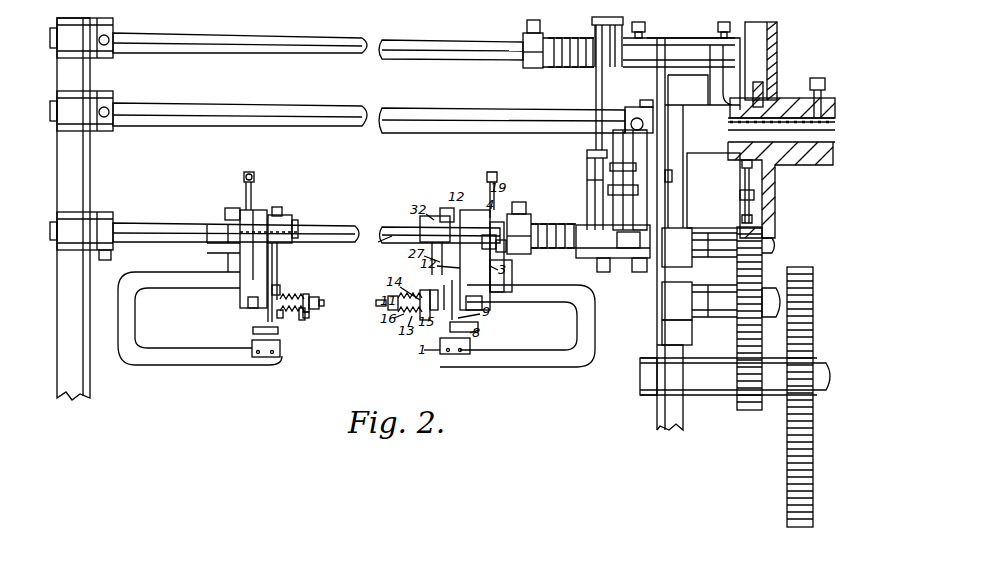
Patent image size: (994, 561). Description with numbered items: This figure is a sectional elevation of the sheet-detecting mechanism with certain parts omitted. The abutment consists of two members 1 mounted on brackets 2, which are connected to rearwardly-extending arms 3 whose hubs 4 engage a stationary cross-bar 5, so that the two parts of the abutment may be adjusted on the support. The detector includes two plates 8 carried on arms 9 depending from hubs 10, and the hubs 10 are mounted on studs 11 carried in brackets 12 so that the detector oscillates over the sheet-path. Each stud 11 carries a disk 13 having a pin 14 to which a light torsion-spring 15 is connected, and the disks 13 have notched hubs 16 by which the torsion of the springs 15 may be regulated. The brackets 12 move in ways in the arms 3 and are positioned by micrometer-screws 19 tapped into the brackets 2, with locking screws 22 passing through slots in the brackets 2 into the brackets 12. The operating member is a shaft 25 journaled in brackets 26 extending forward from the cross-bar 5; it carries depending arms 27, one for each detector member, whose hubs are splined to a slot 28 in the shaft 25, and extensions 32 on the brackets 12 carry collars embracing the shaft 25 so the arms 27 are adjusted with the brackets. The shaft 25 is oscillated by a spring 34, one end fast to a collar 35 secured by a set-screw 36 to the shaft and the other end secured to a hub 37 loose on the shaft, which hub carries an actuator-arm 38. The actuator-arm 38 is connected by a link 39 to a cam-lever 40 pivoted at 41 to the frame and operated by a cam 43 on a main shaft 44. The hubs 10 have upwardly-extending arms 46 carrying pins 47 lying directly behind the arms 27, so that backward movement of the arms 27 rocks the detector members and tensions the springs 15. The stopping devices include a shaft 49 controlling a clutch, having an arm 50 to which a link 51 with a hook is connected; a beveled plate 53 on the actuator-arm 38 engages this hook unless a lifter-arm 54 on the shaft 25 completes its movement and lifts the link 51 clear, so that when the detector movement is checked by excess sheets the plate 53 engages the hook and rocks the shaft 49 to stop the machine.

The abutment member 1 is at (280, 348).
The bracket 2 is at (134, 324).
The rearwardly-extending arm 3 is at (228, 268).
The hub 4 is at (226, 210).
The cross-bar 5 is at (432, 225).
The plate 8 is at (253, 331).
The arm 9 is at (270, 317).
The hub 10 is at (444, 305).
The stud 11 is at (320, 304).
The bracket 12 is at (268, 272).
The disk 13 is at (303, 316).
The pin 14 is at (309, 298).
The torsion-spring 15 is at (282, 314).
The notched hub 16 is at (309, 314).
The micrometer-screw 19 is at (253, 200).
The screw 22 is at (497, 250).
The shaft 25 is at (384, 243).
The bracket 26 is at (117, 218).
The depending arm 27 is at (274, 266).
The slot 28 is at (344, 226).
The extension 32 is at (280, 215).
The spring 34 is at (552, 225).
The collar 35 is at (512, 252).
The set-screw 36 is at (518, 212).
The hub 37 is at (600, 250).
The actuator-arm 38 is at (587, 172).
The link 39 is at (622, 213).
The cam-lever 40 is at (640, 190).
The pivot 41 is at (665, 178).
The cam 43 is at (640, 107).
The shaft 44 is at (522, 115).
The upwardly-extending arm 46 is at (482, 302).
The pin 47 is at (286, 288).
The shaft 49 is at (470, 46).
The arm 50 is at (616, 19).
The link 51 is at (597, 97).
The beveled plate 53 is at (586, 152).
The lifter-arm 54 is at (590, 182).